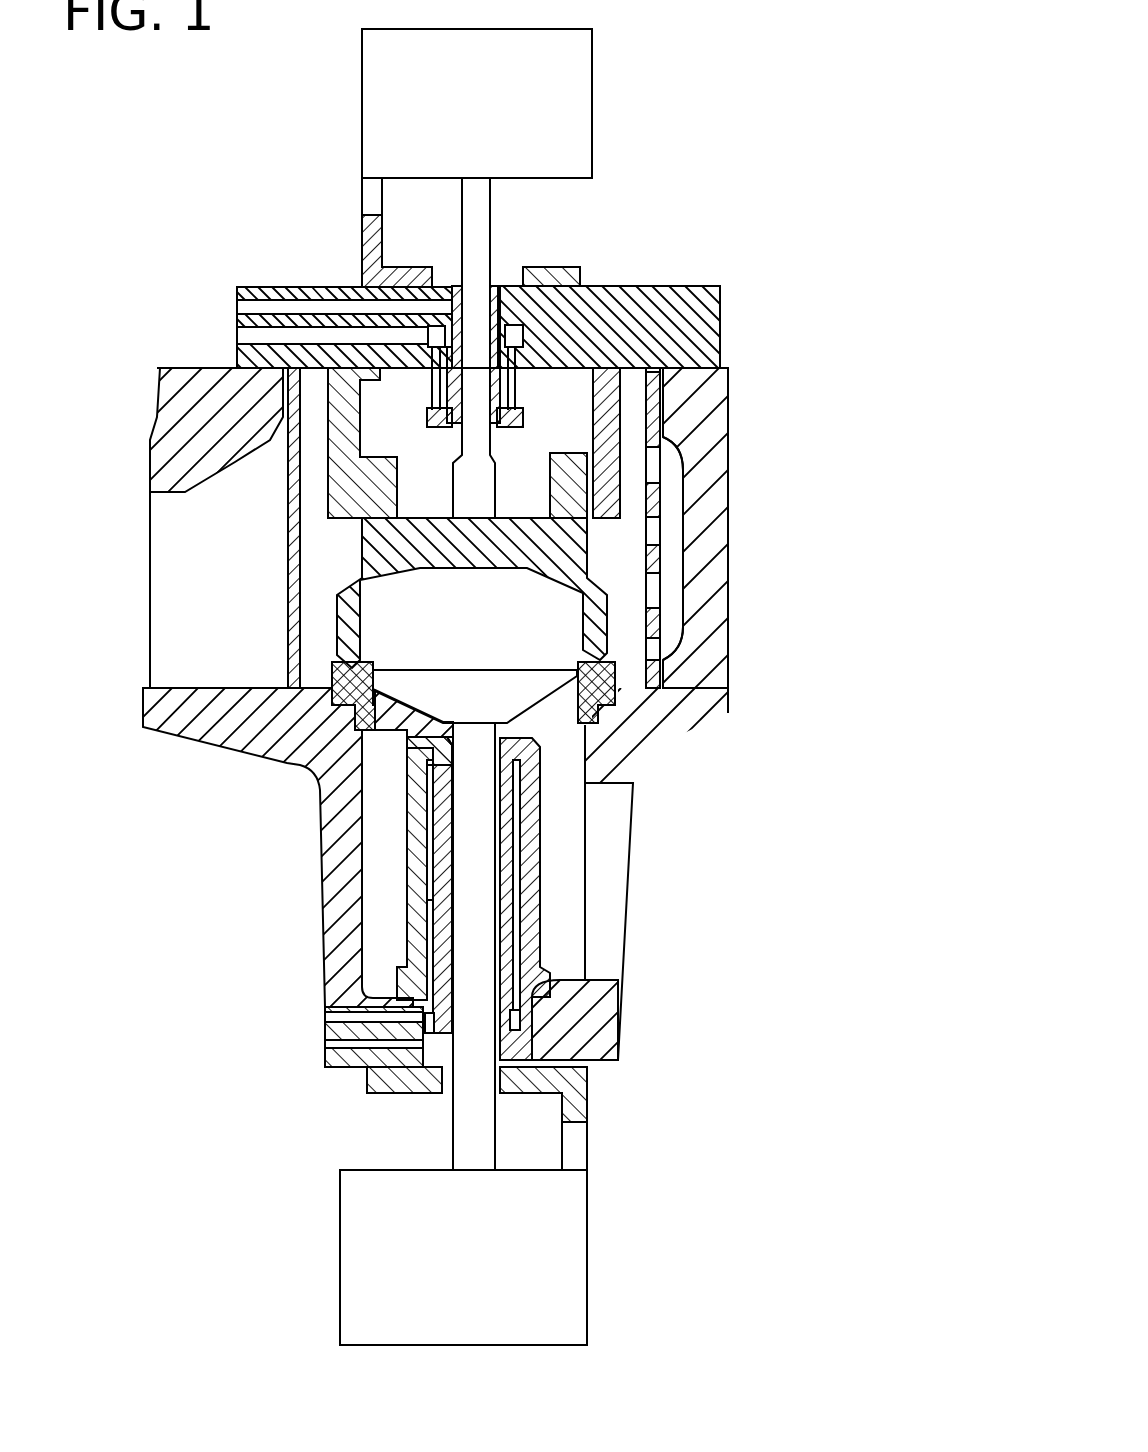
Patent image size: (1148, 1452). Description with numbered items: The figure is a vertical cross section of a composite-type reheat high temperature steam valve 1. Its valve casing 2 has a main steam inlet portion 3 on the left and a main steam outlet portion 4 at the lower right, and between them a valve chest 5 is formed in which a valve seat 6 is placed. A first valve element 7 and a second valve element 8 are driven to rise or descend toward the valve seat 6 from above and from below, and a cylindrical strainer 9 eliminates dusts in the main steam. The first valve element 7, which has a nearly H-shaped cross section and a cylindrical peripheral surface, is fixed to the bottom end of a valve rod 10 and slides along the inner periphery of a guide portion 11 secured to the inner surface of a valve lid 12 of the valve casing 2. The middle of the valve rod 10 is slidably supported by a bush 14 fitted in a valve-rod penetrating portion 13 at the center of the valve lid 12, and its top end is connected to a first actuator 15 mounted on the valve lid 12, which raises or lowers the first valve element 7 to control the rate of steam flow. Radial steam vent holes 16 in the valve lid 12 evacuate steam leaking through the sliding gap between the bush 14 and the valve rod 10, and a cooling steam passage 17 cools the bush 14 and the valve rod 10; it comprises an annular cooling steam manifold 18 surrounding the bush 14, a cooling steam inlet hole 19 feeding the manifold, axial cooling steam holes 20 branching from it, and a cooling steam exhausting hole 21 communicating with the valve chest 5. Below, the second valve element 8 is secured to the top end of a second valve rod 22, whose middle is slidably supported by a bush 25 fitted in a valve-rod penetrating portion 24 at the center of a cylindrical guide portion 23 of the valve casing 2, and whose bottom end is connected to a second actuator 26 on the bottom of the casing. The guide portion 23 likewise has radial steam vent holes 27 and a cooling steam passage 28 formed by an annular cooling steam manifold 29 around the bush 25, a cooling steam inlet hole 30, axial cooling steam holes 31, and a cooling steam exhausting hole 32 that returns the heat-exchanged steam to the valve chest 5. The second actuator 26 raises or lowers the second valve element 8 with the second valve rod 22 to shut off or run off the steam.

The composite-type reheat high temperature steam valve 1 is at (858, 487).
The valve casing 2 is at (705, 503).
The main steam inlet portion 3 is at (165, 685).
The main steam outlet portion 4 is at (600, 955).
The valve chest 5 is at (497, 634).
The valve seat 6 is at (612, 680).
The first valve element 7 is at (596, 590).
The second valve element 8 is at (537, 680).
The cylindrical strainer 9 is at (655, 463).
The valve rod 10 is at (487, 233).
The guide portion 11 is at (663, 393).
The valve lid 12 is at (706, 312).
The valve-rod penetrating portion 13 is at (450, 272).
The bush 14 is at (498, 307).
The first actuator 15 is at (572, 122).
The steam vent holes 16 is at (283, 305).
The cooling steam passage 17 is at (540, 343).
The cooling steam manifold 18 is at (435, 350).
The cooling steam inlet hole 19 is at (270, 338).
The cooling steam holes 20 is at (357, 462).
The cooling steam exhausting hole 21 is at (292, 552).
The second valve rod 22 is at (480, 917).
The cylindrical guide portion 23 is at (530, 797).
The valve-rod penetrating portion 24 is at (447, 1073).
The bush 25 is at (540, 860).
The second actuator 26 is at (572, 1228).
The steam vent holes 27 is at (330, 1047).
The cooling steam passage 28 is at (420, 957).
The cooling steam manifold 29 is at (427, 1013).
The cooling steam inlet hole 30 is at (337, 1017).
The cooling steam holes 31 is at (407, 822).
The cooling steam exhausting hole 32 is at (443, 742).